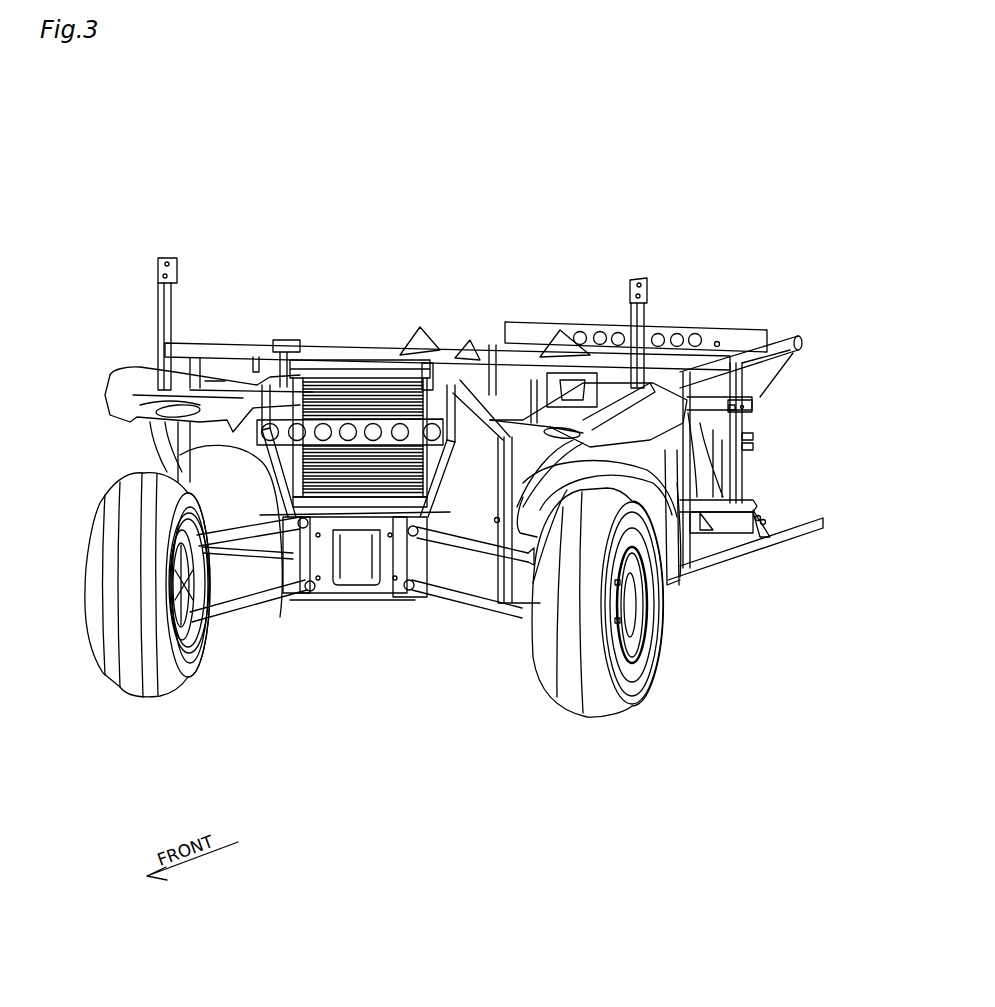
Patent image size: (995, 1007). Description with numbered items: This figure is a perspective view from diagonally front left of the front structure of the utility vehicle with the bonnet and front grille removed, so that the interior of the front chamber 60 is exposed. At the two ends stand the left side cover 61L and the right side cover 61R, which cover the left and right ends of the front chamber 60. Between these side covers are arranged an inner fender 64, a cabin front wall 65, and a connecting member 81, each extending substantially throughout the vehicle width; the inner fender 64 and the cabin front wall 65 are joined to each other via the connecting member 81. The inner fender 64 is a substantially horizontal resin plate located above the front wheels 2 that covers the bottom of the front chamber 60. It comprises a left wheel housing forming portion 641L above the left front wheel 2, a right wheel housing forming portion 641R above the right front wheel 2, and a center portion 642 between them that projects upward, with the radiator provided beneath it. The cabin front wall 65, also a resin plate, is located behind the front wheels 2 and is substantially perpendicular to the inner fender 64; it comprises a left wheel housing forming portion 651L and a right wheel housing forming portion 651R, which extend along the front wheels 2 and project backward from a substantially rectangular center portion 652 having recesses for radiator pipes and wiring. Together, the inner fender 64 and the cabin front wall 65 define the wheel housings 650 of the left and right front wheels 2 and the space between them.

The front wheel 2 is at (125, 685).
The front chamber 60 is at (227, 387).
The right side cover 61R is at (117, 388).
The left side cover 61L is at (652, 390).
The inner fender 64 is at (528, 193).
The right wheel housing forming portion 641R is at (262, 387).
The left wheel housing forming portion 641L is at (533, 385).
The center portion 642 is at (372, 362).
The cabin front wall 65 is at (453, 783).
The right wheel housing forming portion 651R is at (270, 582).
The left wheel housing forming portion 651L is at (520, 592).
The center portion 652 is at (413, 600).
The wheel housing 650 is at (268, 490).
The connecting member 81 is at (213, 365).